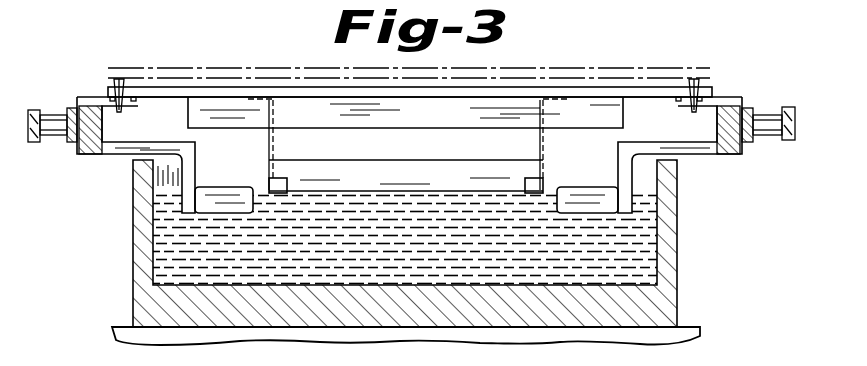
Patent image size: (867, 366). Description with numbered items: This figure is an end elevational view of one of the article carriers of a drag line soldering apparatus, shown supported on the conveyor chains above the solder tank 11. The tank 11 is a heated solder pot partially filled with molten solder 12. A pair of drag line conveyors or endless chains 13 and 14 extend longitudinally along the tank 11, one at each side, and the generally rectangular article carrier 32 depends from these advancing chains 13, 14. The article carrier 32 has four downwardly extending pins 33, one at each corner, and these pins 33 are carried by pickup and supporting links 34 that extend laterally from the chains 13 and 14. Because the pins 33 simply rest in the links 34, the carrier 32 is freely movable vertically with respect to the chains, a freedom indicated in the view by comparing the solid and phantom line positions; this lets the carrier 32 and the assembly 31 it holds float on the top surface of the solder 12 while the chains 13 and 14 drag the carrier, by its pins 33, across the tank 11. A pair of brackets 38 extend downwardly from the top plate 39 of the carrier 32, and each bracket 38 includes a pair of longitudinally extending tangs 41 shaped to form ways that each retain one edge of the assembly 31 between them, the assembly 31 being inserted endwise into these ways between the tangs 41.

The solder tank 11 is at (663, 308).
The molten solder 12 is at (643, 258).
The conveyor chain 13 is at (53, 125).
The conveyor chain 14 is at (767, 137).
The assembly 31 is at (404, 187).
The article carrier 32 is at (572, 14).
The downwardly extending pin 33 is at (118, 113).
The pickup and supporting link 34 is at (88, 97).
The bracket 38 is at (265, 142).
The top plate 39 is at (160, 92).
The tang 41 is at (287, 178).